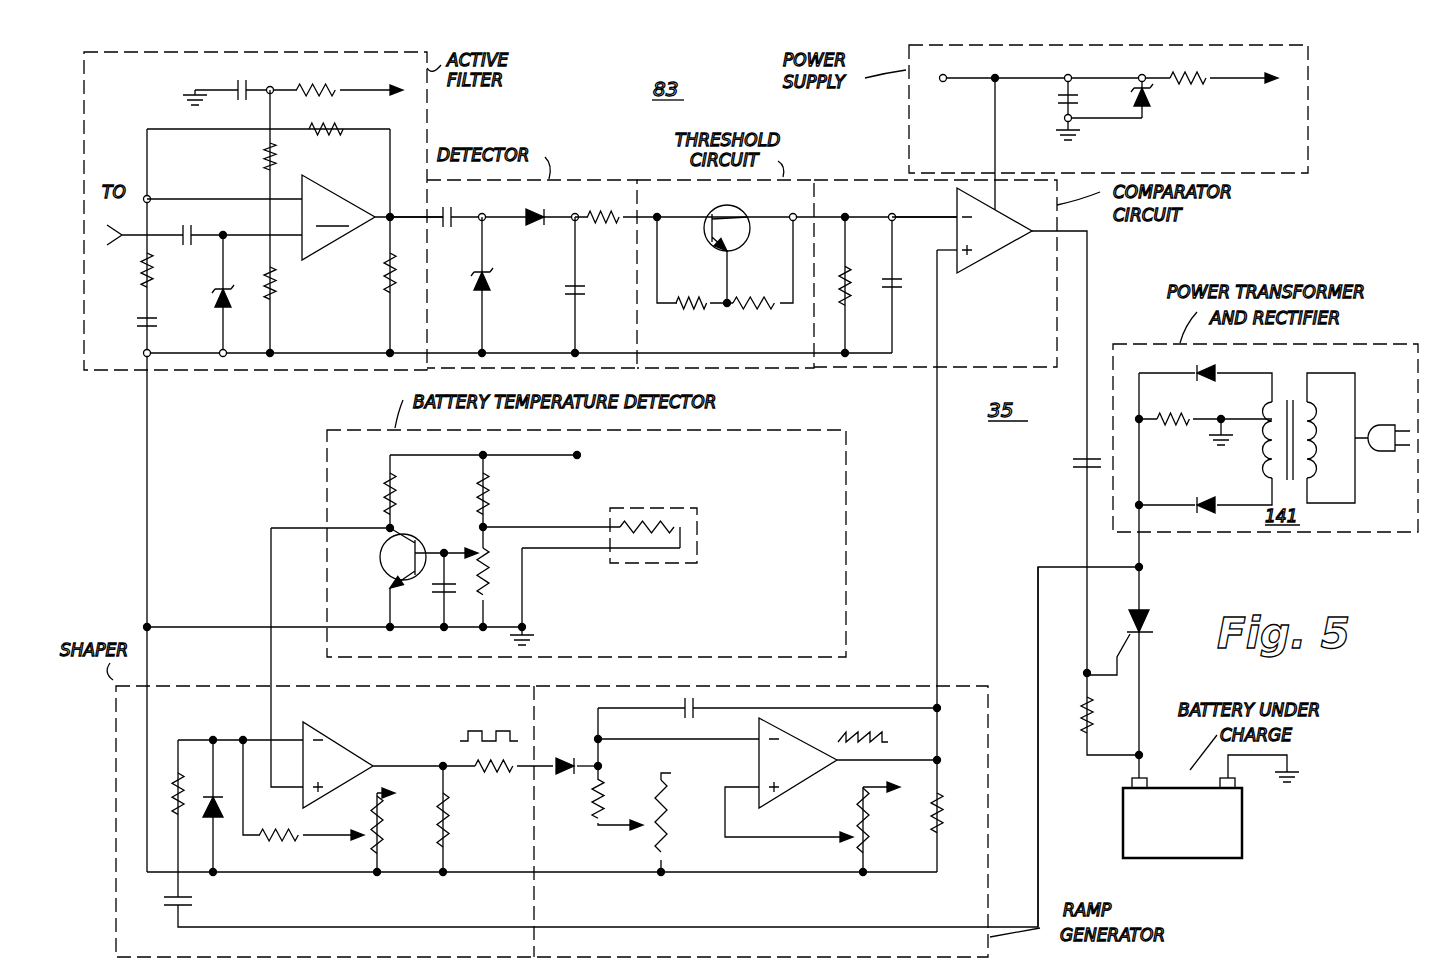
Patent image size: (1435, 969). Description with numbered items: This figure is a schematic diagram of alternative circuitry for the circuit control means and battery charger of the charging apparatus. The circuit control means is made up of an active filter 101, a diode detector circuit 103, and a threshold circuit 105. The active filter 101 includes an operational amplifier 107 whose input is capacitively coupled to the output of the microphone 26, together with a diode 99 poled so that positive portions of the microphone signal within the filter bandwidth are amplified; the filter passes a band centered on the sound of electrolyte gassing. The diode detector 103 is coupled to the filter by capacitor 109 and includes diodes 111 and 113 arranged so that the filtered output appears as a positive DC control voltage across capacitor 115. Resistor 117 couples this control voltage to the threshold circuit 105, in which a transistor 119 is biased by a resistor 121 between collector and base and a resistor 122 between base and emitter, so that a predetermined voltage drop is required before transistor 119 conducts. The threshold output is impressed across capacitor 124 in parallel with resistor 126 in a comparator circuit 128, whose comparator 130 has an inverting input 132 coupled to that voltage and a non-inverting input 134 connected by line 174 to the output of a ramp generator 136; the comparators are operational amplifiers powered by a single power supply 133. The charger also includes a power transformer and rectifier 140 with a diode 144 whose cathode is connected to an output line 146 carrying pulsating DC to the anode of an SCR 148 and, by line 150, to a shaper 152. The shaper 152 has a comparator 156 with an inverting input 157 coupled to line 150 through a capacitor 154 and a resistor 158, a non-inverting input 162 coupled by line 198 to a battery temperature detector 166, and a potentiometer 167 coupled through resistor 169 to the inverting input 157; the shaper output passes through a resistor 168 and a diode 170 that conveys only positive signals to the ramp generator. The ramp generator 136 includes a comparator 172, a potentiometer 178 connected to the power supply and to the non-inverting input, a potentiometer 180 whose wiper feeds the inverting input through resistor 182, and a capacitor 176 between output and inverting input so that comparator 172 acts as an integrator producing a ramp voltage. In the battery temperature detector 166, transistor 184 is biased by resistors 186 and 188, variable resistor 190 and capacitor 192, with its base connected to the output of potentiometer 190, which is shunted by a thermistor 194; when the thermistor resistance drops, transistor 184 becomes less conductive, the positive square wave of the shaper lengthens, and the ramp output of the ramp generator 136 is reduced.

The sound transducer or microphone 26 is at (201, 223).
The diode 99 is at (213, 297).
The active filter 101 is at (432, 127).
The diode detector circuit 103 is at (592, 178).
The threshold circuit 105 is at (830, 178).
The operational amplifier 107 is at (372, 217).
The capacitor 109 is at (458, 212).
The diode 111 is at (472, 290).
The diode 113 is at (527, 223).
The capacitor 115 is at (583, 290).
The resistor 117 is at (766, 231).
The transistor 119 is at (712, 206).
The resistor 121 is at (703, 308).
The resistor 122 is at (751, 309).
The capacitor 124 is at (896, 285).
The resistor 126 is at (850, 268).
The comparator circuit 128 is at (1045, 252).
The comparator 130 is at (1002, 222).
The inverting input 132 is at (957, 191).
The power supply 133 is at (1310, 107).
The non-inverting input 134 is at (960, 254).
The ramp generator 136 is at (990, 821).
The power transformer and rectifier 140 is at (1393, 510).
The diode 144 is at (1207, 511).
The output line 146 is at (1143, 551).
The SCR 148 is at (1150, 614).
The line 150 is at (780, 927).
The shaper 152 is at (116, 718).
The capacitor 154 is at (192, 899).
The comparator 156 is at (331, 757).
The inverting input 157 is at (301, 725).
The resistor 158 is at (178, 772).
The non-inverting input 162 is at (300, 800).
The battery temperature detector 166 is at (823, 470).
The potentiometer 167 is at (383, 821).
The resistor 168 is at (500, 771).
The resistor 169 is at (280, 836).
The diode 170 is at (557, 758).
The comparator 172 is at (794, 767).
The ramp signal line 174 is at (937, 548).
The capacitor 176 is at (682, 716).
The potentiometer 178 is at (868, 821).
The potentiometer 180 is at (665, 815).
The resistor 182 is at (595, 808).
The transistor 184 is at (411, 533).
The resistor 186 is at (385, 493).
The resistor 188 is at (492, 506).
The variable resistor 190 is at (497, 590).
The capacitor 192 is at (433, 588).
The thermistor 194 is at (697, 535).
The line 198 is at (271, 563).